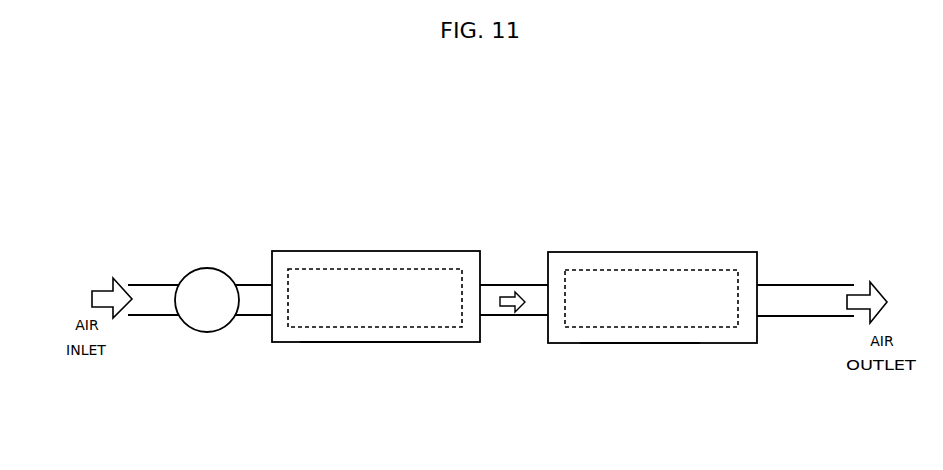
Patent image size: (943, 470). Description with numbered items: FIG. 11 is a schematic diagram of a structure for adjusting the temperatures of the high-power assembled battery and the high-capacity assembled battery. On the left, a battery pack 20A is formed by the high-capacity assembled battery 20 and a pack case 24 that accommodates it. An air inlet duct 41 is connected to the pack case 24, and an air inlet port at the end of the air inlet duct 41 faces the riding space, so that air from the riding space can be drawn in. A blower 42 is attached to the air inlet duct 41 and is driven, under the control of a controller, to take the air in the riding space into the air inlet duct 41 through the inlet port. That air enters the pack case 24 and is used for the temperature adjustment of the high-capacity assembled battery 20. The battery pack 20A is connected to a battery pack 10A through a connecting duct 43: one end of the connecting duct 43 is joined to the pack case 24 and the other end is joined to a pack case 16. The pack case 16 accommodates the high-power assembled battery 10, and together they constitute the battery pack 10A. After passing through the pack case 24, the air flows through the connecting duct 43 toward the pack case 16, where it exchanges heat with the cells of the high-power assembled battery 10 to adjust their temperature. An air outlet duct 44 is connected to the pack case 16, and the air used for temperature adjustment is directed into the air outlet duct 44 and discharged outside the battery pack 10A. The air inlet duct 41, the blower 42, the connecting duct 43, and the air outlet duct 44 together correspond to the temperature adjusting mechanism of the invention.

The high-power assembled battery 10 is at (668, 270).
The battery pack 10A is at (633, 348).
The pack case 16 is at (603, 252).
The high-capacity assembled battery 20 is at (393, 270).
The battery pack 20A is at (366, 346).
The pack case 24 is at (327, 252).
The air inlet duct 41 is at (150, 317).
The blower 42 is at (205, 285).
The connecting duct 43 is at (508, 317).
The air outlet duct 44 is at (793, 317).